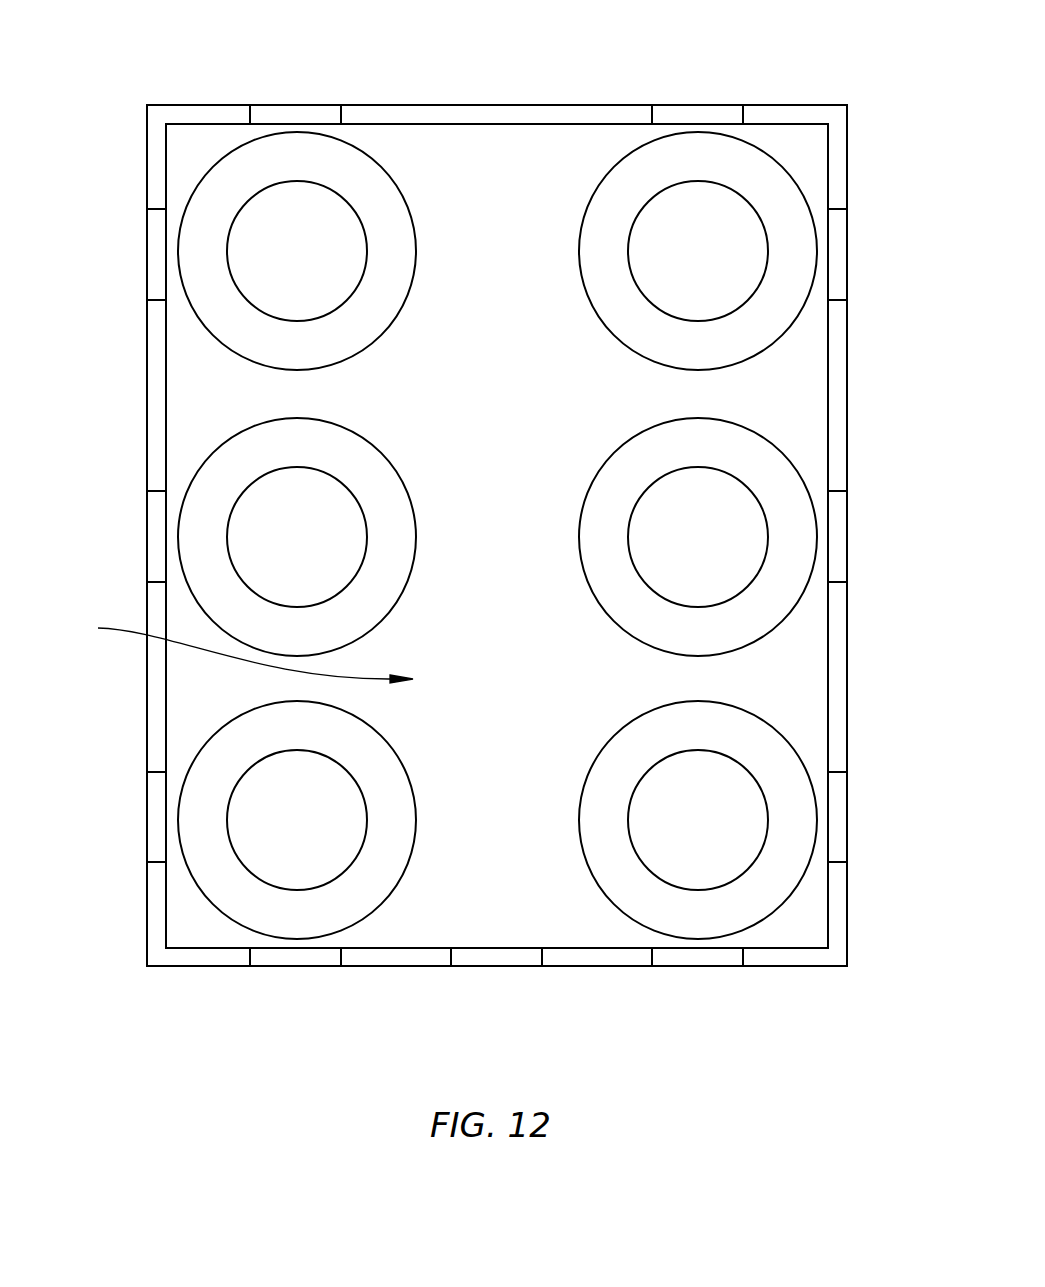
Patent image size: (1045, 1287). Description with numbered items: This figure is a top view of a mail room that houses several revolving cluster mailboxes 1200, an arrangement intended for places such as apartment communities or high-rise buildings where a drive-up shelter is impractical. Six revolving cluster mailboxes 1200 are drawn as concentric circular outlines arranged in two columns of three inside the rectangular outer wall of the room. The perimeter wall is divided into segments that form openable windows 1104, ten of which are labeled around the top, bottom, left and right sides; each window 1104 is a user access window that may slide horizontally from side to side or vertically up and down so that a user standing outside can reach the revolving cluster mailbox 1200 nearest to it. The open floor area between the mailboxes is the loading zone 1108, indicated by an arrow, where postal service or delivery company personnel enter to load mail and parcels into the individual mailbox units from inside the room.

The openable window 1104 is at (489, 550).
The loading zone 1108 is at (230, 650).
The revolving cluster mailbox 1200 is at (497, 535).